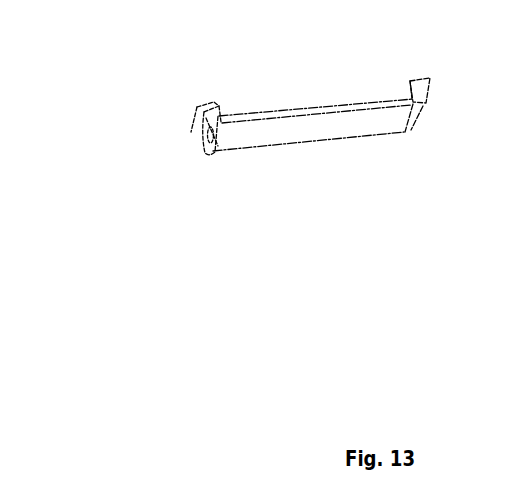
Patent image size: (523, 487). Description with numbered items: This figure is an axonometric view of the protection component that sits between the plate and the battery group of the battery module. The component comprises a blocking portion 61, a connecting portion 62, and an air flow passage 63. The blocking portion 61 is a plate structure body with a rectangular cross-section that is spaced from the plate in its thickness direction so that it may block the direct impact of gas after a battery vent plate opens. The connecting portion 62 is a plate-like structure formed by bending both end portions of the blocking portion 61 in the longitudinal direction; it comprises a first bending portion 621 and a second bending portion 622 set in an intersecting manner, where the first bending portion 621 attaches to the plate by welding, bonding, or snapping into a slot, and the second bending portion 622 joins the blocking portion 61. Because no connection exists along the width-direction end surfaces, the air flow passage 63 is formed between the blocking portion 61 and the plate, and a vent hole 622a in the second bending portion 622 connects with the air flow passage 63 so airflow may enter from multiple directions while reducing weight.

The blocking portion 61 is at (313, 143).
The connecting portion 62 is at (174, 202).
The first bending portion 621 is at (194, 125).
The second bending portion 622 is at (210, 150).
The vent hole 622a is at (215, 152).
The air flow passage 63 is at (348, 86).